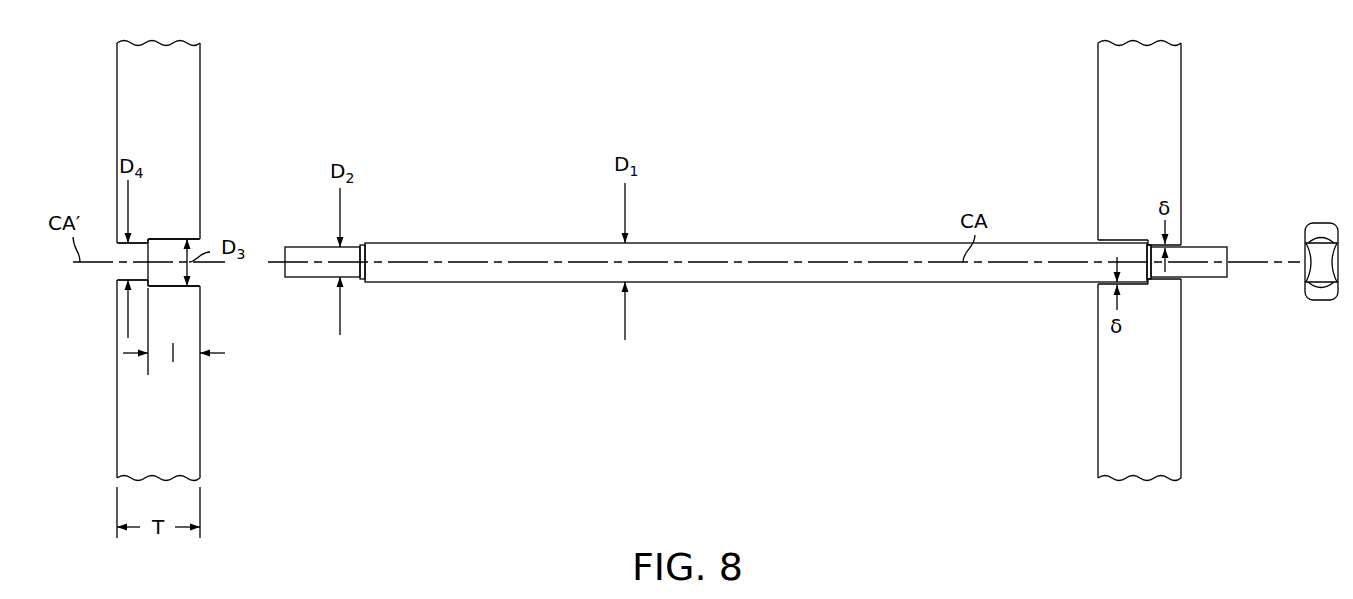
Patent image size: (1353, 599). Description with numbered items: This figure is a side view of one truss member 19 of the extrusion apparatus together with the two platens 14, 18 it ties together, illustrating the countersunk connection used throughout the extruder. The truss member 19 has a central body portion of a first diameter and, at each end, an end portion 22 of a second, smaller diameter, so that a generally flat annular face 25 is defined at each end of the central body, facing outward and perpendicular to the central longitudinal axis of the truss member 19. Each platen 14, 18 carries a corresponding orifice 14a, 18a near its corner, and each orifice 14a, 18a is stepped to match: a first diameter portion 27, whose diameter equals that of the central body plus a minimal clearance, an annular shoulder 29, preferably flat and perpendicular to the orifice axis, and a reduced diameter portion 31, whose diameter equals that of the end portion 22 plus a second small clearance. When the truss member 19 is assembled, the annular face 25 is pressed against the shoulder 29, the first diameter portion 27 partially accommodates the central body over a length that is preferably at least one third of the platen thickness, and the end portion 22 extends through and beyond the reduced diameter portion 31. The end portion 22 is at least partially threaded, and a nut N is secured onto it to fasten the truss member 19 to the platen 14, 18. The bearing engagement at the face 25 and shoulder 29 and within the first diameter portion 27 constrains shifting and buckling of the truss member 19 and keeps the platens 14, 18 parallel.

The platen 14 is at (1173, 70).
The orifice 14a is at (1172, 281).
The platen 18 is at (192, 87).
The orifice 18a is at (147, 238).
The truss member 19 is at (843, 242).
The end portion 22 is at (293, 246).
The annular face 25 is at (363, 282).
The first diameter portion 27 is at (180, 287).
The annular shoulder 29 is at (150, 242).
The reduced diameter portion 31 is at (123, 272).
The nut N is at (1320, 232).